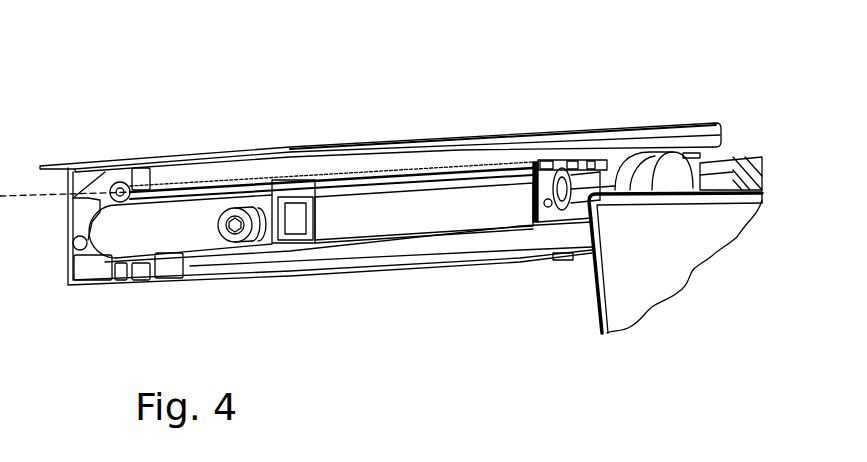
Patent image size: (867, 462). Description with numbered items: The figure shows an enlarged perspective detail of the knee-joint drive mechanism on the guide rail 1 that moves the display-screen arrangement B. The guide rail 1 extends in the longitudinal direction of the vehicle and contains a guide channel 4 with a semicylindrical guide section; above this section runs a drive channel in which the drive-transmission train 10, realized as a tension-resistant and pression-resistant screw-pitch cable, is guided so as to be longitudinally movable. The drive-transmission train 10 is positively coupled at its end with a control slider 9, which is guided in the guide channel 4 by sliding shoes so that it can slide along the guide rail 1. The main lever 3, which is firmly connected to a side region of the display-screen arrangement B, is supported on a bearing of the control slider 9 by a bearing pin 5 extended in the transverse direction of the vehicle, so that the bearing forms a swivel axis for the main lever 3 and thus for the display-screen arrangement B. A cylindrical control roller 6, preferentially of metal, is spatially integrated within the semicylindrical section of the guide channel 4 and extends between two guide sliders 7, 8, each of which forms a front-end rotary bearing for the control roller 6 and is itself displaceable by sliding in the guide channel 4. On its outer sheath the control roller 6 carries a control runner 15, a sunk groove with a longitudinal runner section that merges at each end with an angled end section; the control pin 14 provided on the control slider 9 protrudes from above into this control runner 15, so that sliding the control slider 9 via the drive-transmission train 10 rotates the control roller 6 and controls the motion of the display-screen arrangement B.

The guide rail 1 is at (180, 158).
The main lever 3 is at (680, 165).
The guide channel 4 is at (166, 238).
The bearing pin 5 is at (608, 172).
The control roller 6 is at (442, 215).
The guide slider 7 is at (262, 207).
The guide slider 8 is at (604, 180).
The control slider 9 is at (548, 160).
The drive-transmission train 10 is at (505, 162).
The control pin 14 is at (530, 210).
The control runner 15 is at (370, 212).
The display-screen arrangement B is at (612, 288).